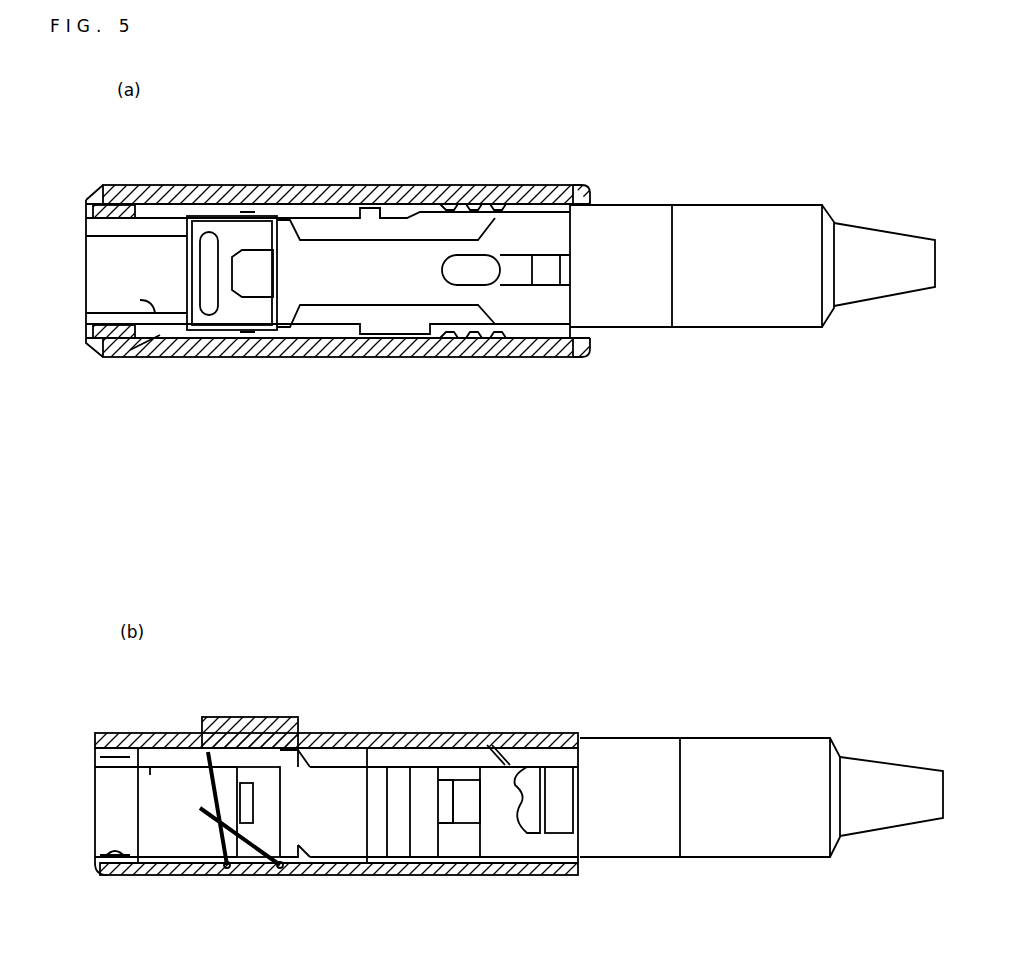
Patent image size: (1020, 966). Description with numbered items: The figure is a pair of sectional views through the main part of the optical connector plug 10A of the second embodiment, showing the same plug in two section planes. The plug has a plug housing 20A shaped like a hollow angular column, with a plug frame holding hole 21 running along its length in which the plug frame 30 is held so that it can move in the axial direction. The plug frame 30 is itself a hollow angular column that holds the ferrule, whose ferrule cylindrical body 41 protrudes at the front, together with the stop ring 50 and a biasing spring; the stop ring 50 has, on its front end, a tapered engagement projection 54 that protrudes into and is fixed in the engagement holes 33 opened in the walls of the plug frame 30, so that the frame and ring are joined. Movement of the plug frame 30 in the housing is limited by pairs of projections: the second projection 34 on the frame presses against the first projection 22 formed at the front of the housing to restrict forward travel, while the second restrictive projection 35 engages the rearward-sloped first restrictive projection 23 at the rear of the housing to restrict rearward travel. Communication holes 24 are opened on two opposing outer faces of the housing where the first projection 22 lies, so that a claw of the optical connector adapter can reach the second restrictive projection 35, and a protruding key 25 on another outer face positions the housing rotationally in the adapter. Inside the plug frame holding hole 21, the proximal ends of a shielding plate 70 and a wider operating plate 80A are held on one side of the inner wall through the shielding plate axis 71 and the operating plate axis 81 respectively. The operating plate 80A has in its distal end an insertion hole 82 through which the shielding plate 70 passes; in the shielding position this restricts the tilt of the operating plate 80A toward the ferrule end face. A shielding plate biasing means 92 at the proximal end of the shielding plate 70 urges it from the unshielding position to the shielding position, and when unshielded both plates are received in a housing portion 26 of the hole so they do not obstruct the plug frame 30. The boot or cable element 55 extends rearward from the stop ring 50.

The optical connector plug 10A is at (510, 244).
The plug housing 20A is at (338, 234).
The plug frame holding hole 21 is at (305, 187).
The first projection 22 is at (120, 187).
The first restrictive projection 23 is at (497, 188).
The communication holes 24 is at (218, 187).
The protruding key 25 is at (267, 717).
The housing portion 26 is at (143, 303).
The plug frame 30 is at (473, 843).
The engagement holes 33 is at (530, 785).
The second projection 34 is at (372, 212).
The second restrictive projection 35 is at (450, 188).
The ferrule cylindrical body 41 is at (255, 285).
The stop ring 50 is at (630, 290).
The engagement projection 54 is at (528, 840).
The optical cable 55 is at (748, 283).
The shielding plate 70 is at (190, 306).
The shielding plate axis 71 is at (220, 873).
The operating plate 80A is at (262, 233).
The operating plate axis 81 is at (280, 873).
The insertion hole 82 is at (192, 262).
The shielding plate biasing means 92 is at (195, 873).